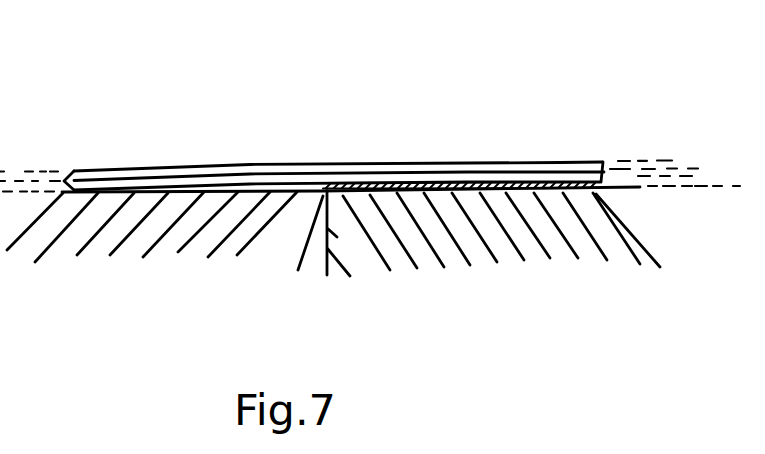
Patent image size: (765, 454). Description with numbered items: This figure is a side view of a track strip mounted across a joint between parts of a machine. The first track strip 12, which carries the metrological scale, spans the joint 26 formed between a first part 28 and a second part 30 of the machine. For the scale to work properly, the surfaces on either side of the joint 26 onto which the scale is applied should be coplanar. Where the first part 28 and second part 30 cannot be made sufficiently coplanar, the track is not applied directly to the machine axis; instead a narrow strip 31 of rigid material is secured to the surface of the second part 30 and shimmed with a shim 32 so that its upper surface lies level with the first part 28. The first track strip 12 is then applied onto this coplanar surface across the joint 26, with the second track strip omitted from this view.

The first track strip 12 is at (467, 152).
The joint 26 is at (319, 193).
The first part of a machine 28 is at (66, 174).
The second part of a machine 30 is at (497, 189).
The strip 31 is at (577, 175).
The shim 32 is at (592, 184).